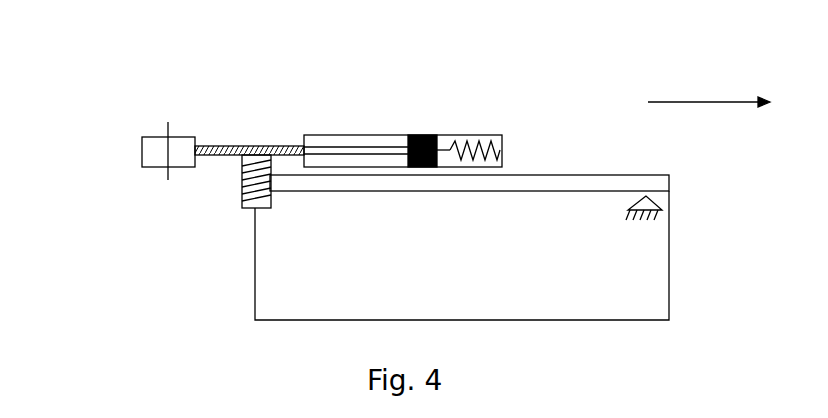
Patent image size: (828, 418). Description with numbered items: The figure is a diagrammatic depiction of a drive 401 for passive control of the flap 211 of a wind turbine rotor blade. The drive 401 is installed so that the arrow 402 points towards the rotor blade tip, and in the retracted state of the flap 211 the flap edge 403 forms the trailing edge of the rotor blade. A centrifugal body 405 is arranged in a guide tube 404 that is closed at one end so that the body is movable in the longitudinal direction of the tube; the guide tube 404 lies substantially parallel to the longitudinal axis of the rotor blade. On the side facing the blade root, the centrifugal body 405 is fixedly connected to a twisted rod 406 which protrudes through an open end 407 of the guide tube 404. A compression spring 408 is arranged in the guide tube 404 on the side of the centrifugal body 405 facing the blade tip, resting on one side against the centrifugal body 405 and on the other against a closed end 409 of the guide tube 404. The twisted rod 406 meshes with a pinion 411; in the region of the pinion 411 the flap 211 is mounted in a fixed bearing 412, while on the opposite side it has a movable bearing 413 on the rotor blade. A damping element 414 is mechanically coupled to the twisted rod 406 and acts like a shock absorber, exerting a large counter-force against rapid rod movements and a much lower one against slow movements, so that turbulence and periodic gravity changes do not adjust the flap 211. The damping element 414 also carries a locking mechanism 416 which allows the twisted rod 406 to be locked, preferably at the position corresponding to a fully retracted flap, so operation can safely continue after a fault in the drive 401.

The drive 401 is at (393, 102).
The arrow 402 is at (702, 102).
The flap edge 403 is at (585, 320).
The guide tube 404 is at (342, 135).
The centrifugal body 405 is at (427, 135).
The twisted rod 406 is at (222, 157).
The open end 407 is at (303, 147).
The compression spring 408 is at (502, 152).
The closed end 409 is at (502, 160).
The pinion 411 is at (242, 195).
The fixed bearing 412 is at (272, 197).
The movable bearing 413 is at (620, 208).
The damping element 414 is at (142, 157).
The locking mechanism 416 is at (168, 122).
The flap 211 is at (463, 270).